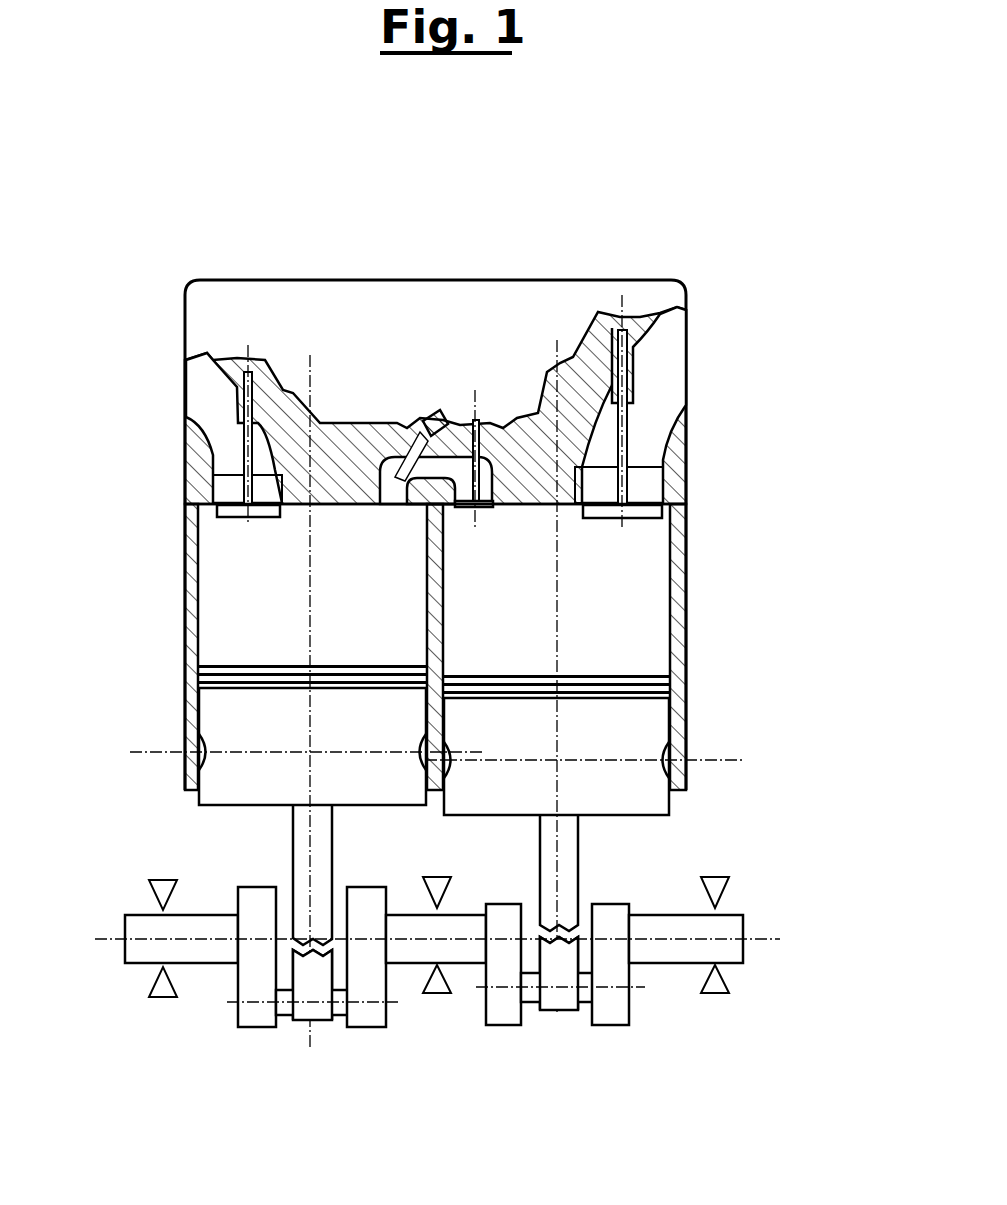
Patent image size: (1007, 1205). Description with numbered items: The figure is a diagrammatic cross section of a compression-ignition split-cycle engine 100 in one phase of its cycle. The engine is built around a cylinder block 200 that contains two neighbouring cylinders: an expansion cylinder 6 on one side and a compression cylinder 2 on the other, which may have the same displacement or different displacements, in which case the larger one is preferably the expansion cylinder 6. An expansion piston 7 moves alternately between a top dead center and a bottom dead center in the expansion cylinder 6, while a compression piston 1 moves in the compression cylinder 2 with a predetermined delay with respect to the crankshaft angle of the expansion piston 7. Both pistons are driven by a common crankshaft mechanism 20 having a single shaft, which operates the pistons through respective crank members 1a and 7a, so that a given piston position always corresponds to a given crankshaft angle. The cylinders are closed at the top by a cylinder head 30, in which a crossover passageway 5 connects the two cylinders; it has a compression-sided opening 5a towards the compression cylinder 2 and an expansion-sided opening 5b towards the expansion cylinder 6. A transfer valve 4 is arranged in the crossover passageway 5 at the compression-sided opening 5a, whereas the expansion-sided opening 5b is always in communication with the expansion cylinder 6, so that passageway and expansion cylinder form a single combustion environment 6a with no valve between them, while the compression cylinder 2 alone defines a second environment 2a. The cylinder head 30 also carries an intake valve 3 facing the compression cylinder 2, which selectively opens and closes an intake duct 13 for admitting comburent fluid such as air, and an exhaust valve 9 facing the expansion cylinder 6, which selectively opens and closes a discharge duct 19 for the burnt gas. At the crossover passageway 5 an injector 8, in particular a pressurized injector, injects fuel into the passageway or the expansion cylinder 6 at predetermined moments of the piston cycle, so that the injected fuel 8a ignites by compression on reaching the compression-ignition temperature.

The compression-ignition split-cycle engine 100 is at (738, 248).
The cylinder block 200 is at (180, 313).
The cylinder head 30 is at (385, 292).
The discharge duct 19 is at (212, 403).
The intake duct 13 is at (667, 388).
The exhaust valve 9 is at (240, 465).
The intake valve 3 is at (630, 423).
The transfer valve 4 is at (480, 425).
The crossover passageway 5 is at (386, 458).
The compression-sided opening 5a is at (493, 507).
The expansion-sided opening 5b is at (383, 507).
The injector 8 is at (435, 418).
The injected fuel 8a is at (398, 475).
The expansion cylinder 6 is at (185, 642).
The single combustion environment 6a is at (215, 572).
The expansion piston 7 is at (212, 772).
The crank member 7a is at (300, 830).
The compression cylinder 2 is at (677, 650).
The second environment 2a is at (653, 593).
The compression piston 1 is at (643, 728).
The crank member 1a is at (565, 842).
The crankshaft mechanism 20 is at (660, 910).